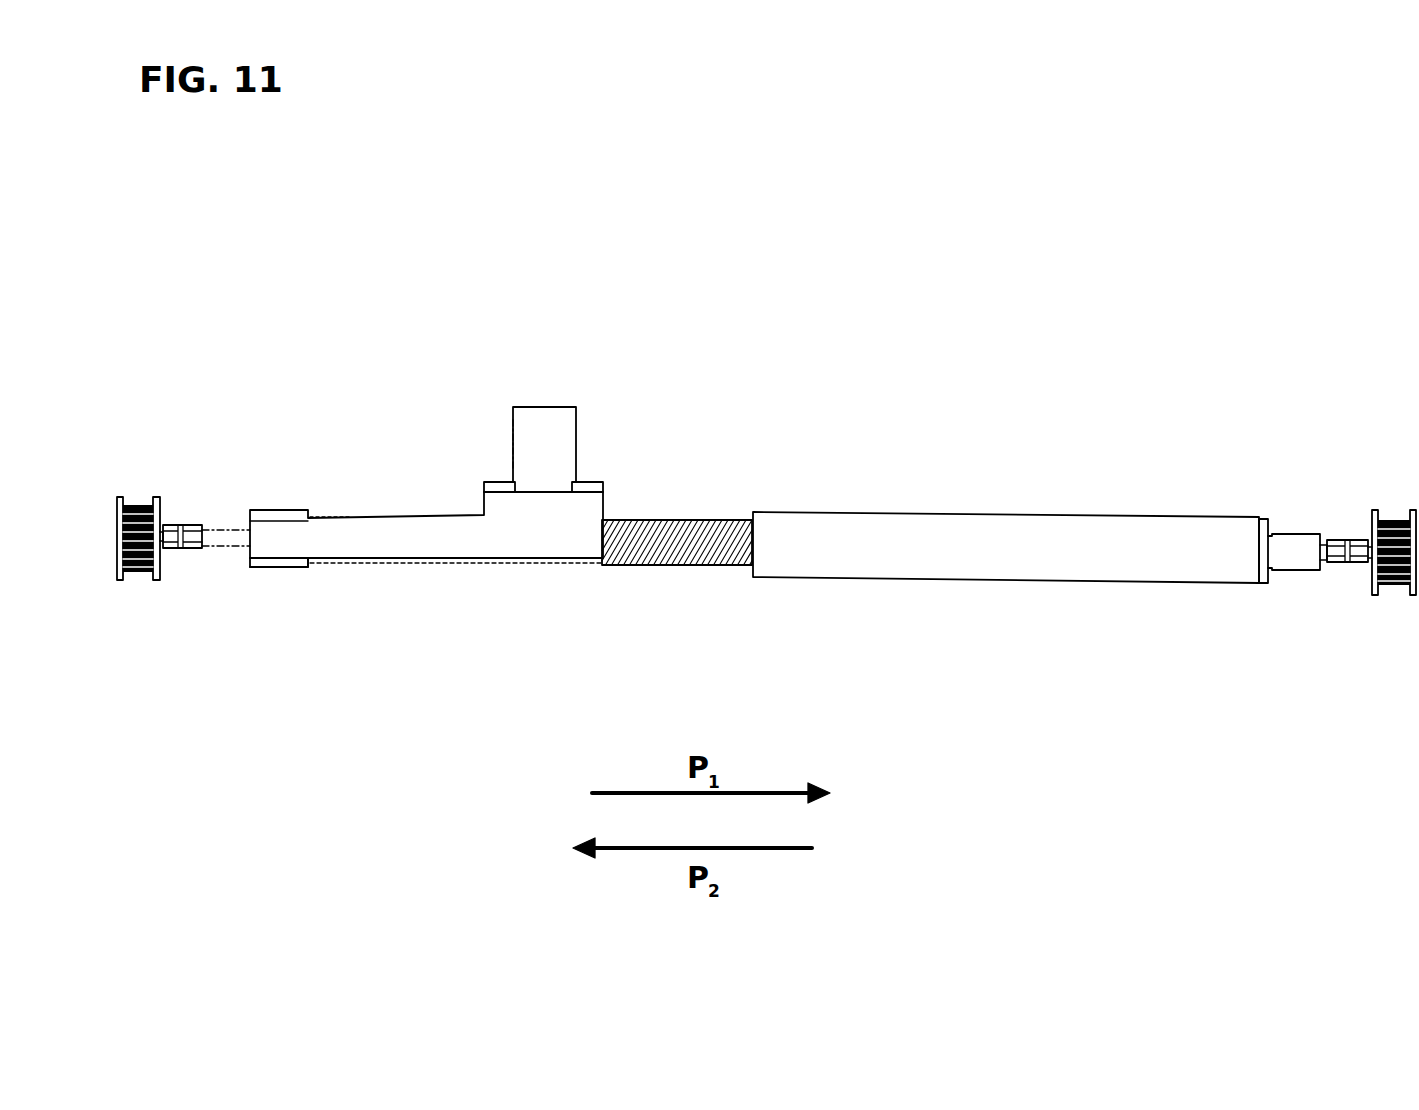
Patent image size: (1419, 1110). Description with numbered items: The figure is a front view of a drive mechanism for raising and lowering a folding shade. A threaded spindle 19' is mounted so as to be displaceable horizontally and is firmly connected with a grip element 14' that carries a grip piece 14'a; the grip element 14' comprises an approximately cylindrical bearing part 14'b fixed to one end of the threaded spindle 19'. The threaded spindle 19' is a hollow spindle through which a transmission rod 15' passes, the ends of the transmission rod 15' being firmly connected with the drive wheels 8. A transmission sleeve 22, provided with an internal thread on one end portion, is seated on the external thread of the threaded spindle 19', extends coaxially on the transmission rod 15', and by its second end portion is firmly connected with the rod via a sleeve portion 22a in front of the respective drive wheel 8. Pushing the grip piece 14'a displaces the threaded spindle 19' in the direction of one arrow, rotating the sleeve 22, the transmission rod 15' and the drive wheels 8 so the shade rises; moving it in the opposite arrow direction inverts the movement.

The drive wheel 8 is at (133, 503).
The transmission rod 15' is at (766, 488).
The grip element 14' is at (391, 501).
The grip piece 14'a is at (481, 389).
The bearing part 14'b is at (244, 623).
The threaded spindle 19' is at (672, 607).
The transmission sleeve 22 is at (808, 552).
The sleeve portion 22a is at (1302, 553).